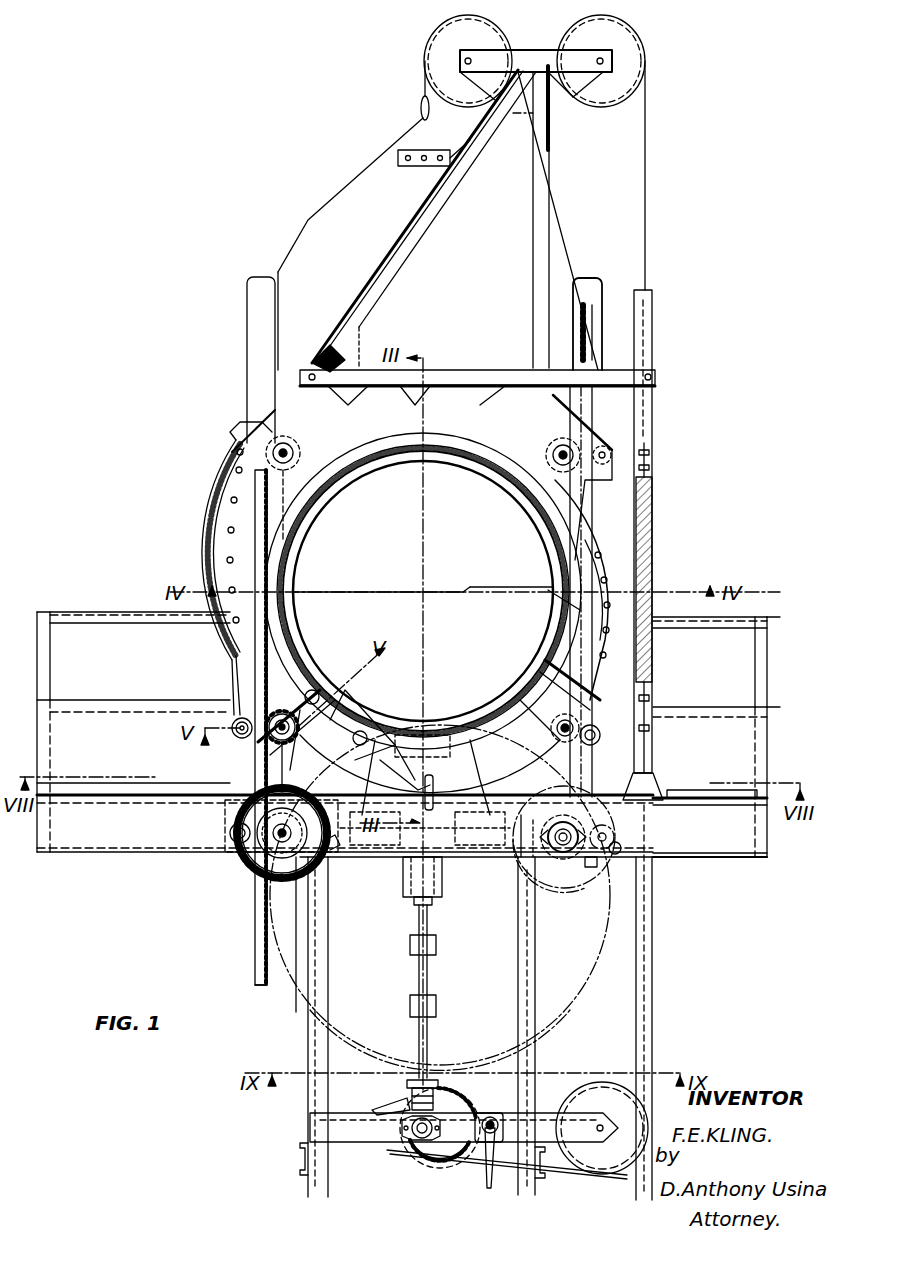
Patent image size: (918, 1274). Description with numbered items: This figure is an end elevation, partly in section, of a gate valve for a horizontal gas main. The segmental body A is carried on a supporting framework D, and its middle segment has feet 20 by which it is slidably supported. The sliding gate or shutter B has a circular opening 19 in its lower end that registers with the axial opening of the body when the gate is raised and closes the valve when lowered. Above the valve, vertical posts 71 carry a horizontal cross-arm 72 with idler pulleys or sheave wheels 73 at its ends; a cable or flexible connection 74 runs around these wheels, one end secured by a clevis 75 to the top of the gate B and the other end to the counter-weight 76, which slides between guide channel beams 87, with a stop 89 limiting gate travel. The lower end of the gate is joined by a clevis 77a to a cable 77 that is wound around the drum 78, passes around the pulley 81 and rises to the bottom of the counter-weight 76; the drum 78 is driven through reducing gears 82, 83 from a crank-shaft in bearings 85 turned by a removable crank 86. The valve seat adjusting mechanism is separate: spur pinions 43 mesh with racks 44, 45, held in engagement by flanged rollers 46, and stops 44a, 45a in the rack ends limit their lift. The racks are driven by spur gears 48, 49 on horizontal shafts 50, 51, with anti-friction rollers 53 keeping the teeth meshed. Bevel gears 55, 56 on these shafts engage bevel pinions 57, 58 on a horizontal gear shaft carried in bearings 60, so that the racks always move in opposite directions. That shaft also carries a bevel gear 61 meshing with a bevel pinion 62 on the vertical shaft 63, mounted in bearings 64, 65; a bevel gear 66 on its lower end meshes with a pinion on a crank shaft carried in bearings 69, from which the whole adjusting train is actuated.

The idler pulleys or sheave wheels 73 is at (428, 46).
The horizontal cross-arm 72 is at (498, 52).
The clevis 75 is at (420, 106).
The cable or flexible connection 74 is at (648, 190).
The stop 89 is at (408, 168).
The vertical posts 71 is at (530, 300).
The rack 45 is at (590, 290).
The channel beams 87 is at (652, 340).
The counter-weight 76 is at (652, 530).
The feet 20 is at (652, 575).
The spur pinion 43 is at (295, 448).
The flanged rollers 46 is at (235, 448).
The horizontal shaft 50 is at (260, 850).
The bevel gear 55 is at (262, 855).
The anti-friction rollers 53 is at (230, 833).
The rack actuating spur gear 48 is at (225, 812).
The rack 44 is at (255, 908).
The stop 44a is at (262, 985).
The bevel pinion 57 is at (332, 850).
The bevel gear 61 is at (440, 800).
The clevis 77a is at (415, 790).
The bearings 60 is at (420, 825).
The bevel pinion 62 is at (403, 890).
The bearing 64 is at (434, 902).
The vertical shaft 63 is at (430, 945).
The bevel pinion 58 is at (540, 855).
The rack actuating spur gear 49 is at (518, 880).
The horizontal shaft 51 is at (600, 826).
The bevel gear 56 is at (598, 872).
The stop 45a is at (585, 888).
The circular opening 19 is at (332, 990).
The cable or flexible connection 77 is at (650, 960).
The reducing gear 83 is at (515, 1118).
The pulley 81 is at (610, 1172).
The reducing gear 82 is at (465, 1095).
The drum 78 is at (440, 1152).
The bearings 69 is at (410, 1135).
The bearings 85 is at (492, 1116).
The removable crank 86 is at (486, 1185).
The bearing 65 is at (407, 1084).
The bevel gear 66 is at (383, 1110).
The segmental body A is at (222, 525).
The sliding gate or shutter B is at (300, 238).
The supporting framework D is at (530, 1040).